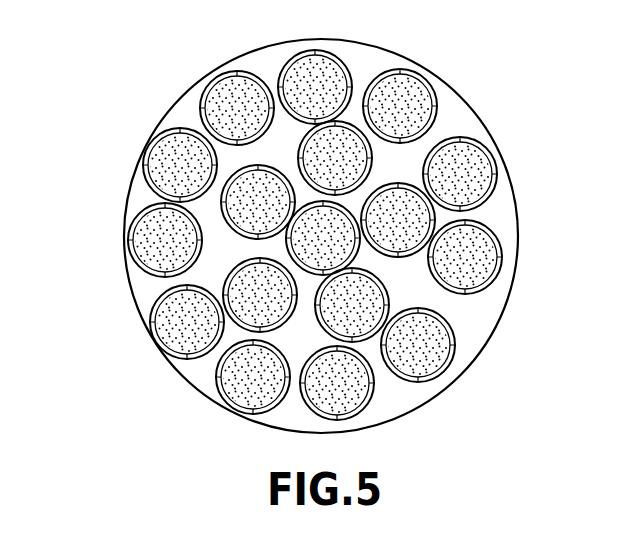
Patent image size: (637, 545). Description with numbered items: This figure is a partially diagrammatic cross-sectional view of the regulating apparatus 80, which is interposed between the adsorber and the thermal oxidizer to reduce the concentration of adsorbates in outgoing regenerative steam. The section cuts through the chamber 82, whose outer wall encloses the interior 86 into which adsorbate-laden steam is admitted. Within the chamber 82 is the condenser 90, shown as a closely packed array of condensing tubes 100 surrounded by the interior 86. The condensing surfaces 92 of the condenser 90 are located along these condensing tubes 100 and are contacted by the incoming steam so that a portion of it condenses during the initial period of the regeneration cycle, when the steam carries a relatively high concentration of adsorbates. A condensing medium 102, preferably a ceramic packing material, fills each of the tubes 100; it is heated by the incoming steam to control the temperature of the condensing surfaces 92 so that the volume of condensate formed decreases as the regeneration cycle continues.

The regulating apparatus 80 is at (242, 40).
The chamber 82 is at (371, 44).
The interior of the chamber 86 is at (452, 106).
The condenser 90 is at (138, 351).
The condensing surfaces 92 is at (456, 343).
The condensing tubes 100 is at (490, 224).
The condensing medium 102 is at (470, 152).